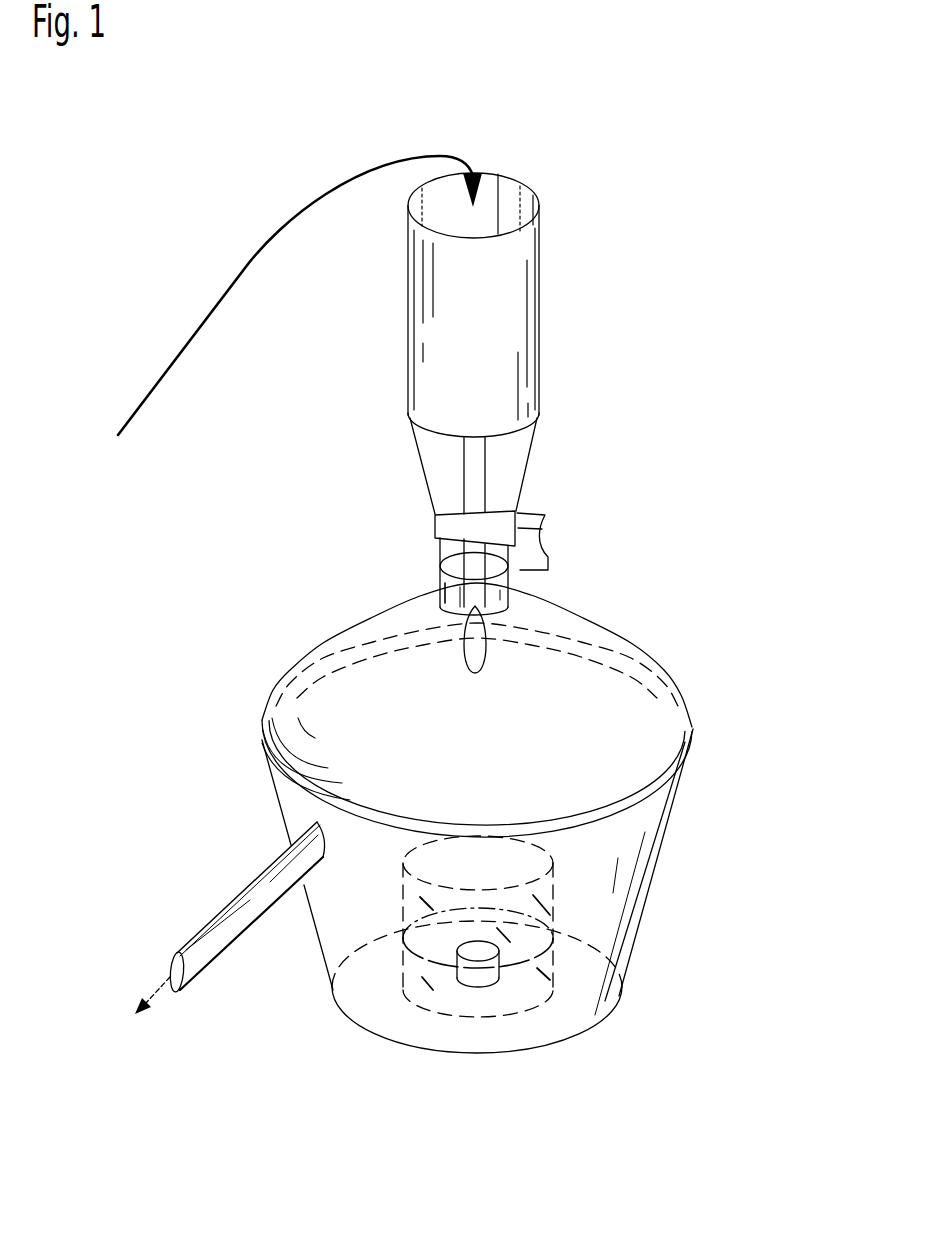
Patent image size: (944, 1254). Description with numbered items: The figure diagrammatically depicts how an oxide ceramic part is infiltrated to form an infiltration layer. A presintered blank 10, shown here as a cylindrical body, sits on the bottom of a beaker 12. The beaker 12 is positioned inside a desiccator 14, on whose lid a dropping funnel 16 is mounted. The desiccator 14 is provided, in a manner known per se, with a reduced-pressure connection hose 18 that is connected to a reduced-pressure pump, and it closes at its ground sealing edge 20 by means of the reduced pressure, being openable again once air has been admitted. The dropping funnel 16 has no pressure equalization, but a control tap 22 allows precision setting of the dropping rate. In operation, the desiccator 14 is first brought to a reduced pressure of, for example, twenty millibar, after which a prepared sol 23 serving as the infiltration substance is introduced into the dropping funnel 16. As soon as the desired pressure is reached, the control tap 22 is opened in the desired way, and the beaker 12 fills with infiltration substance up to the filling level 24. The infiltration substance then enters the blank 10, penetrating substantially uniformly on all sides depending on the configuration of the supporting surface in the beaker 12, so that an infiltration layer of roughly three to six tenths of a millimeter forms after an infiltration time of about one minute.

The blank 10 is at (465, 984).
The beaker 12 is at (553, 890).
The desiccator 14 is at (692, 721).
The dropping funnel 16 is at (539, 305).
The reduced-pressure connection hose 18 is at (240, 943).
The ground sealing edge 20 is at (280, 785).
The control tap 22 is at (543, 531).
The sol 23 is at (226, 289).
The filling level 24 is at (520, 967).